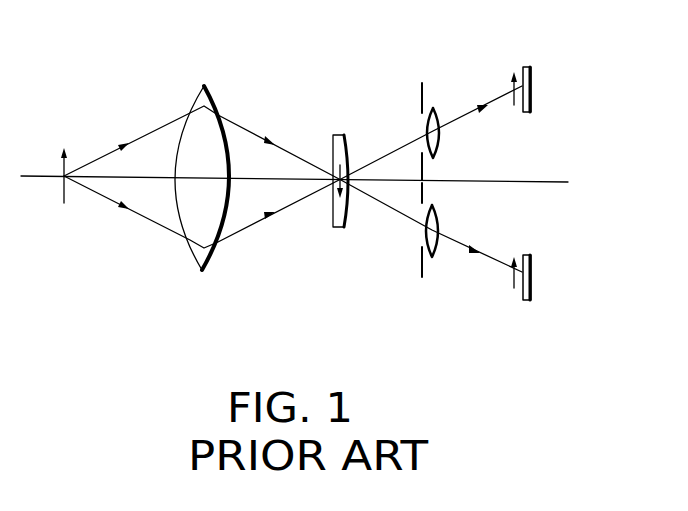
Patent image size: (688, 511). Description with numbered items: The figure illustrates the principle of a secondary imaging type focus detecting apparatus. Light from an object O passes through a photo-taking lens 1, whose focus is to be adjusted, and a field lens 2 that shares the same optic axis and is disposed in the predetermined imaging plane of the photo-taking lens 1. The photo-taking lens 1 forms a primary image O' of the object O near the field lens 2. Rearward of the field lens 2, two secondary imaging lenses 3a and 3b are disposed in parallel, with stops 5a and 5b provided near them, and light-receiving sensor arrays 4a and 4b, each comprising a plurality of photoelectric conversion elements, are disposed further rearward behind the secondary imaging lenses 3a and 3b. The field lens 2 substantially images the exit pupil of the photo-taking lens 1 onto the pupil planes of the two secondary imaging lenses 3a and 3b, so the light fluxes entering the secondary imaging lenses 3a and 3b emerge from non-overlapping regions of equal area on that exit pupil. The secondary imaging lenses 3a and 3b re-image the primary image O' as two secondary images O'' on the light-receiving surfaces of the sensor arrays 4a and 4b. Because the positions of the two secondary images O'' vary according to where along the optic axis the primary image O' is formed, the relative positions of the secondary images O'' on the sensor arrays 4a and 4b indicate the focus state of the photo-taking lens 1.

The photo-taking lens 1 is at (206, 87).
The field lens 2 is at (338, 133).
The secondary imaging lens 3a is at (438, 110).
The secondary imaging lens 3b is at (437, 256).
The light-receiving sensor array 4a is at (532, 68).
The light-receiving sensor array 4b is at (532, 253).
The stop 5a is at (421, 92).
The stop 5b is at (423, 193).
The object O is at (49, 194).
The primary image O' is at (364, 159).
The secondary images O'' is at (500, 204).